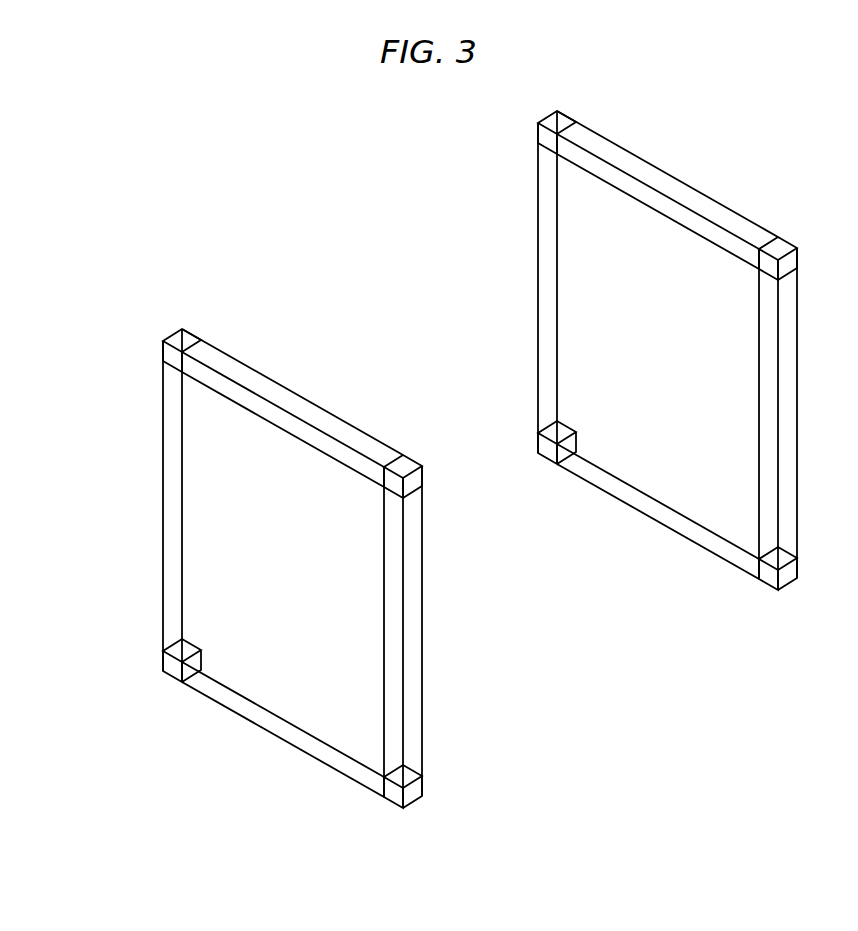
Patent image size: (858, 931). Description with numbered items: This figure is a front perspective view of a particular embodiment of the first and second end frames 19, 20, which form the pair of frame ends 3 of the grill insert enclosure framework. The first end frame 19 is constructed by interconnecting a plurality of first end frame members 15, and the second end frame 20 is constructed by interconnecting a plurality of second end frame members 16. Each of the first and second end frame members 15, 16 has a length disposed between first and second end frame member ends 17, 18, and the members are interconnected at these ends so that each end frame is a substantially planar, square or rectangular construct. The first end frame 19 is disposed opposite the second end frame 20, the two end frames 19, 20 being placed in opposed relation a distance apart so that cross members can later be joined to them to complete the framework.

The frame ends 3 is at (399, 245).
The first end frame members 15 is at (281, 428).
The second end frame members 16 is at (668, 217).
The first end frame member end 17 is at (192, 335).
The second end frame member end 18 is at (163, 357).
The first end frame 19 is at (150, 503).
The second end frame 20 is at (796, 383).